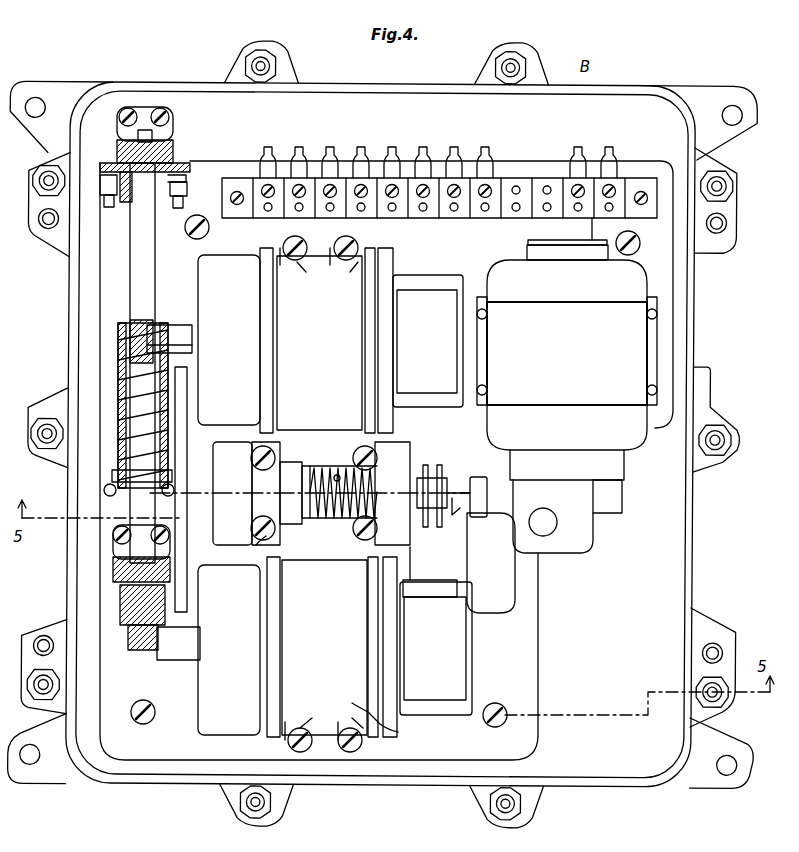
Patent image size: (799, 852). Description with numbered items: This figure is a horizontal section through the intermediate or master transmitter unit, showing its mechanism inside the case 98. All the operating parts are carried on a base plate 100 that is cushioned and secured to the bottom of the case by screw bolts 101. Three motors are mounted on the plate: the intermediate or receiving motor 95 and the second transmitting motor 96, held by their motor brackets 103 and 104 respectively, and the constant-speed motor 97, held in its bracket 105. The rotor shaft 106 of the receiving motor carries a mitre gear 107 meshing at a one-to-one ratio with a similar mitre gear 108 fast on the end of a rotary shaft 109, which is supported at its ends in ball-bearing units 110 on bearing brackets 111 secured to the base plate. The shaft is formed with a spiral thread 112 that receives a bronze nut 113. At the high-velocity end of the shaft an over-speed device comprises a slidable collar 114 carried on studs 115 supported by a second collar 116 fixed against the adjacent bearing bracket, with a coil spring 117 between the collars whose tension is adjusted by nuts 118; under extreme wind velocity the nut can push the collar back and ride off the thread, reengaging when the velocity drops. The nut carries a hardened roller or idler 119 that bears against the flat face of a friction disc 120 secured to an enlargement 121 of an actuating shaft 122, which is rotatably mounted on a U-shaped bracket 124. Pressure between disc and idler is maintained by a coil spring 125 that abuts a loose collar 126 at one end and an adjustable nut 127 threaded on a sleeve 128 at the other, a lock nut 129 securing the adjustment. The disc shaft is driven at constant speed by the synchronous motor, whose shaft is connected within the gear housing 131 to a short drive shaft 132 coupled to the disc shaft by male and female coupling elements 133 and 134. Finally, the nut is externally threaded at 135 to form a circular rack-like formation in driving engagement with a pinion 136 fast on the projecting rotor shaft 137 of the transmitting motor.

The intermediate or receiving motor 95 is at (250, 760).
The second transmitting motor 96 is at (432, 262).
The constant-speed motor 97 is at (475, 286).
The case 98 is at (688, 318).
The base plate 100 is at (540, 672).
The screw bolts 101 is at (208, 229).
The motor bracket 103 is at (396, 732).
The motor bracket 104 is at (318, 272).
The bracket 105 is at (627, 330).
The rotor shaft 106 is at (192, 648).
The mitre gear 107 is at (157, 645).
The mitre gear 108 is at (127, 625).
The rotary shaft 109 is at (135, 515).
The ball-bearing units 110 is at (172, 150).
The bearing brackets 111 is at (122, 133).
The spiral thread 112 is at (125, 395).
The nut 113 is at (112, 476).
The collar 114 is at (124, 198).
The studs 115 is at (102, 190).
The second collar 116 is at (170, 172).
The coil spring 117 is at (183, 186).
The nuts 118 is at (104, 204).
The roller or idler 119 is at (104, 490).
The friction disc 120 is at (190, 402).
The enlargement 121 is at (222, 440).
The actuating shaft 122 is at (334, 475).
The U-shaped bracket 124 is at (240, 438).
The coil spring 125 is at (333, 518).
The collar 126 is at (412, 548).
The adjustable nut 127 is at (256, 545).
The sleeve 128 is at (288, 462).
The lock nut 129 is at (312, 462).
The gear housing 131 is at (582, 520).
The short drive shaft 132 is at (452, 515).
The male coupling element 133 is at (456, 478).
The female coupling element 134 is at (432, 465).
The external thread 135 is at (118, 378).
The pinion 136 is at (146, 320).
The rotor shaft 137 is at (182, 334).